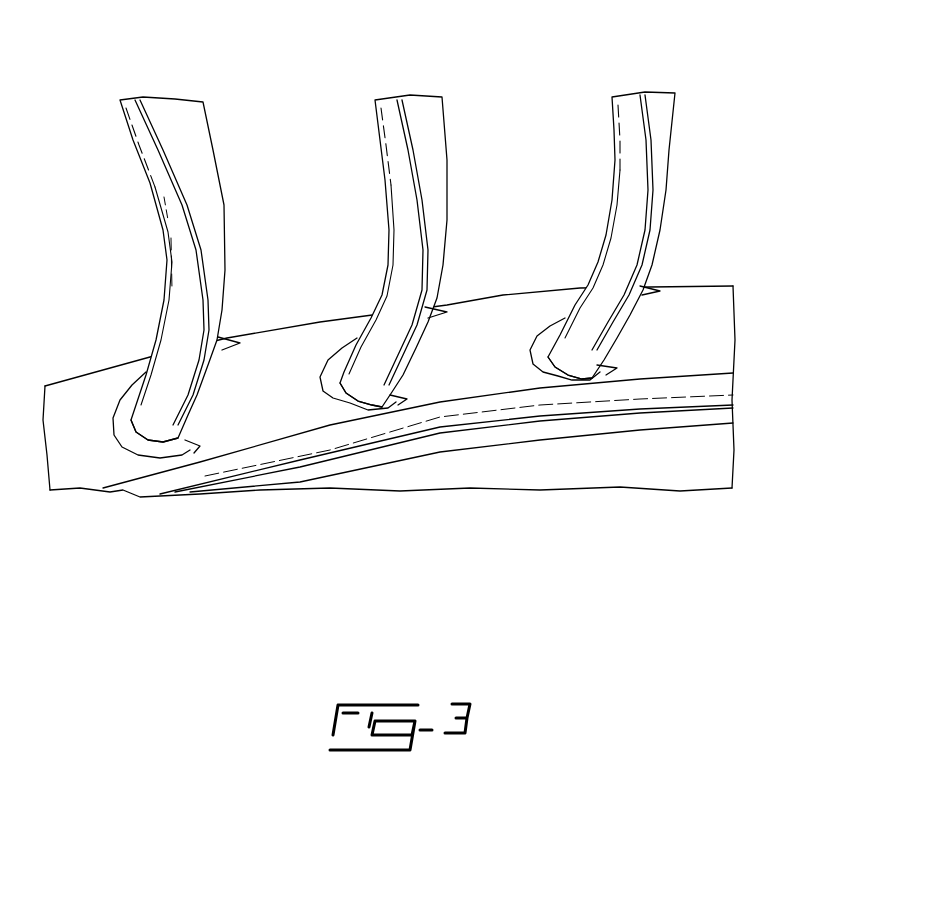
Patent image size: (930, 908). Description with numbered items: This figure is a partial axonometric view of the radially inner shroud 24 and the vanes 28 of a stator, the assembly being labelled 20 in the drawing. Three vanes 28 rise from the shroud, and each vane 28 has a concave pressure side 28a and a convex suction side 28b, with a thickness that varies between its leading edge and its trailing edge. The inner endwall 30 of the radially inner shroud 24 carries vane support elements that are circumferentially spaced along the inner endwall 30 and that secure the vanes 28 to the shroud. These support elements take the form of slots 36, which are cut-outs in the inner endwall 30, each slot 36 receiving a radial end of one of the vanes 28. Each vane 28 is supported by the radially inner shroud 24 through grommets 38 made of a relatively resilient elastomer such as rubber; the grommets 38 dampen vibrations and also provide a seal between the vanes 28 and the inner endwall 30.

The airfoil assembly 20 is at (306, 205).
The radially inner shroud 24 is at (703, 287).
The vane 28 is at (362, 235).
The concave pressure side 28a is at (195, 155).
The convex suction side 28b is at (152, 162).
The inner endwall 30 is at (710, 352).
The slot 36 is at (143, 387).
The grommet 38 is at (131, 440).